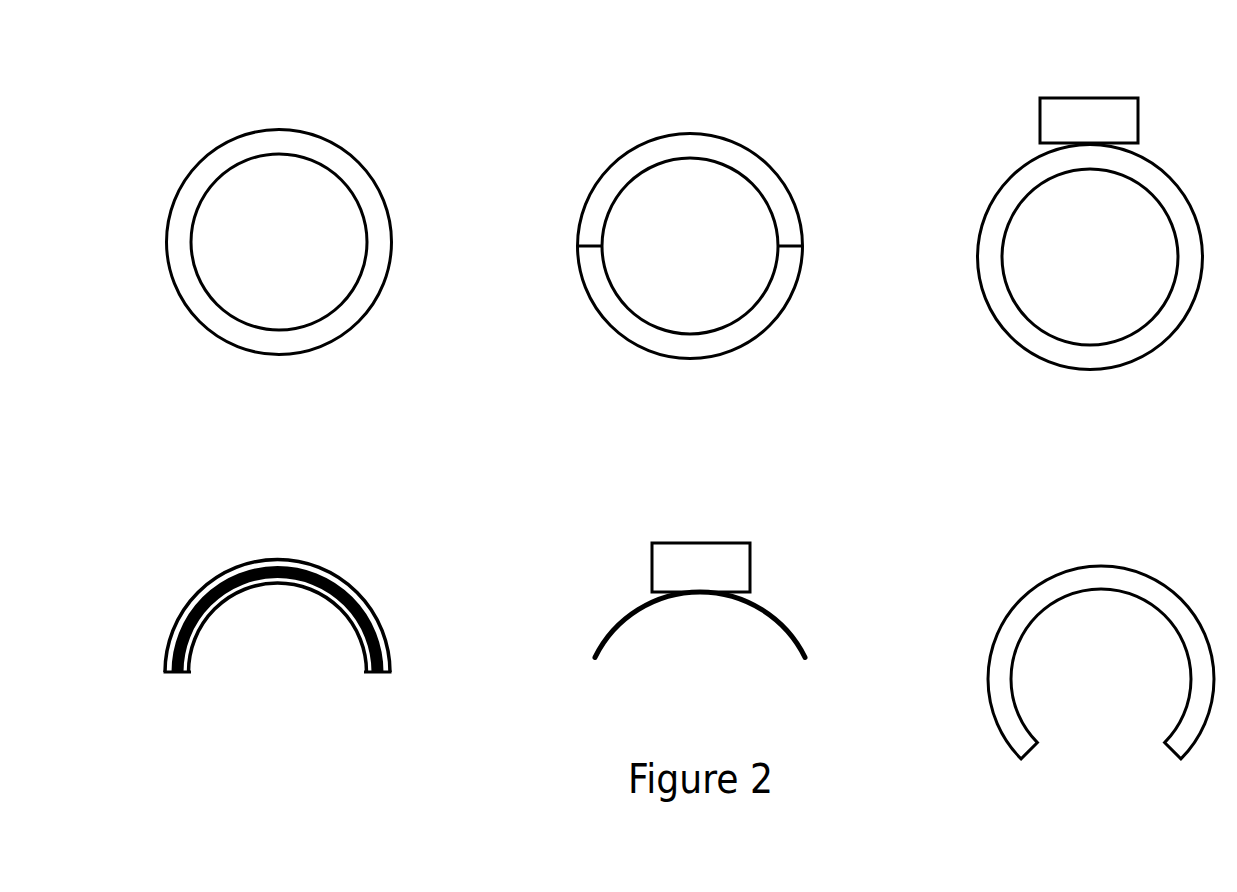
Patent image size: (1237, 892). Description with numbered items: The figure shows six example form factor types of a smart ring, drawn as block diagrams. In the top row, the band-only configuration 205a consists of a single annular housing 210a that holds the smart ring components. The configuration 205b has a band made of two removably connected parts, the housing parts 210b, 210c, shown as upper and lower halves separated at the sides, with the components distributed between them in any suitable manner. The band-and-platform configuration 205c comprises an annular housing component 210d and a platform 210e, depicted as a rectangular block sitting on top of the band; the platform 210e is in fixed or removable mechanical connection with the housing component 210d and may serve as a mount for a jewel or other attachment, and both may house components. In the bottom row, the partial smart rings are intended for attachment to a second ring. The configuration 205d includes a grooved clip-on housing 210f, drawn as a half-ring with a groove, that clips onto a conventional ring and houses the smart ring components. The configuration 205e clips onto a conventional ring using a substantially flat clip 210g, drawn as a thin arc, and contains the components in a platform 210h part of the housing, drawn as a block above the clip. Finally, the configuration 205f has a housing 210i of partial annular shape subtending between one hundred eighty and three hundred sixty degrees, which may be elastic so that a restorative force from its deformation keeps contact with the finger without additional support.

The band-only configuration 205a is at (249, 213).
The two-part band configuration 205b is at (649, 216).
The band-and-platform configuration 205c is at (1064, 221).
The partial smart ring configuration 205d is at (254, 584).
The partial smart ring configuration 205e is at (689, 568).
The partial annular configuration 205f is at (1075, 618).
The housing 210a is at (172, 213).
The housing part 210b is at (587, 213).
The housing part 210c is at (590, 300).
The housing component 210d is at (985, 208).
The platform 210e is at (1138, 113).
The grooved clip-on housing 210f is at (177, 622).
The flat clip 210g is at (617, 622).
The platform 210h is at (752, 558).
The housing 210i is at (1002, 622).